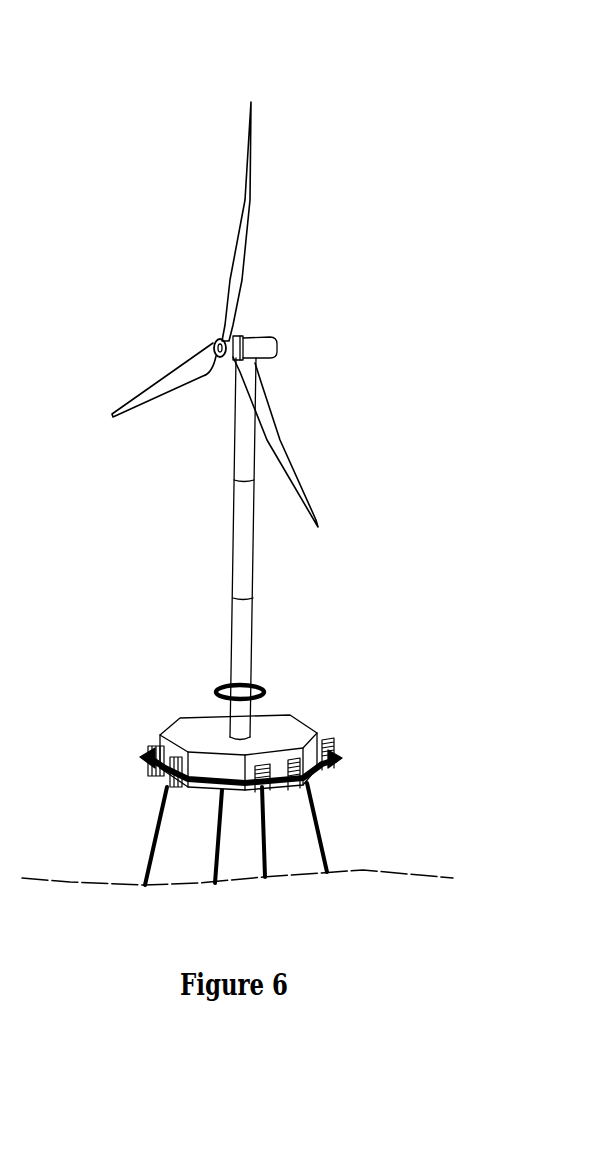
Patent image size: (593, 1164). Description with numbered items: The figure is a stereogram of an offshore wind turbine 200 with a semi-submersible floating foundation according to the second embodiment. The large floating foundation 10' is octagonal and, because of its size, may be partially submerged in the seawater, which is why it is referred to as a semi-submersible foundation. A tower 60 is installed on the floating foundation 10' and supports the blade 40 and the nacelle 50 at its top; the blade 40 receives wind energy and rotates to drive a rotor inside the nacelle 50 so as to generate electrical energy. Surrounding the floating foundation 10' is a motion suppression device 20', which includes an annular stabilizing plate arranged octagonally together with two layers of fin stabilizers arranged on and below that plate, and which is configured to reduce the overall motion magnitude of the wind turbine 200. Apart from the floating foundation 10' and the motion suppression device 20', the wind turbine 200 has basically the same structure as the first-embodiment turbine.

The wind turbine 200 is at (190, 45).
The blade 40 is at (247, 195).
The nacelle 50 is at (273, 337).
The tower 60 is at (242, 570).
The floating foundation 10' is at (292, 734).
The motion suppression device 20' is at (311, 765).